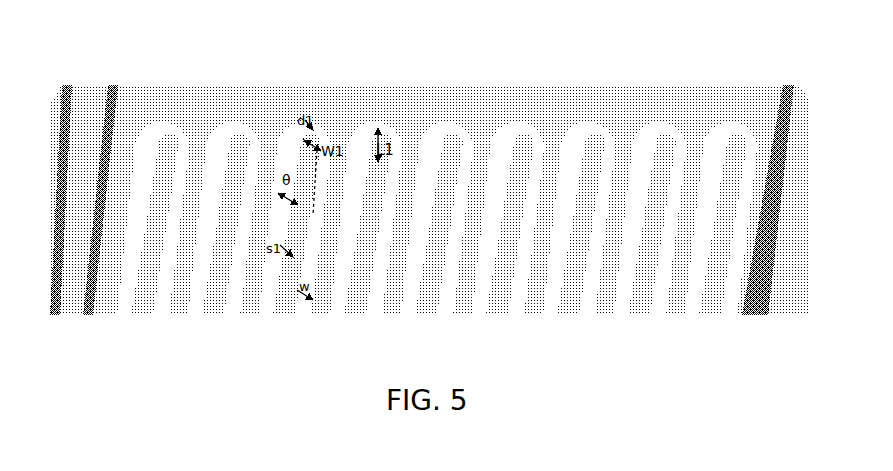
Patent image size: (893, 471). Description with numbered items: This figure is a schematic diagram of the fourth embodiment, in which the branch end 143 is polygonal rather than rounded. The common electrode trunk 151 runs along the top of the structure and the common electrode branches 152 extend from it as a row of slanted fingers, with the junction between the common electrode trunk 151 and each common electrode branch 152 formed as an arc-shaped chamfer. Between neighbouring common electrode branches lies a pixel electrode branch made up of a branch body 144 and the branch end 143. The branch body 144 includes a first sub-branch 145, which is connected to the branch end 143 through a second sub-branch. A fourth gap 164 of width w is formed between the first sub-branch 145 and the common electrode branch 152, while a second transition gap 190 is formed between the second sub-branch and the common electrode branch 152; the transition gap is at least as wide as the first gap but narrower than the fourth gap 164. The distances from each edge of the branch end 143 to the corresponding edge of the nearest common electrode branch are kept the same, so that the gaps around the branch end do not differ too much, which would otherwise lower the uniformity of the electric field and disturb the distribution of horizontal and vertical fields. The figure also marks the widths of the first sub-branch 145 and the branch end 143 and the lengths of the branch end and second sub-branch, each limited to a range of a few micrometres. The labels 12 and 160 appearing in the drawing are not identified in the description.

The display module 12 is at (349, 167).
The branch end 143 is at (325, 130).
The branch body 144 is at (295, 272).
The first sub-branch 145 is at (302, 185).
The common electrode trunk 151 is at (490, 105).
The common electrode branch 152 is at (257, 287).
The rounded end of slot 160 is at (318, 128).
The fourth gap 164 is at (310, 288).
The second transition gap 190 is at (318, 200).